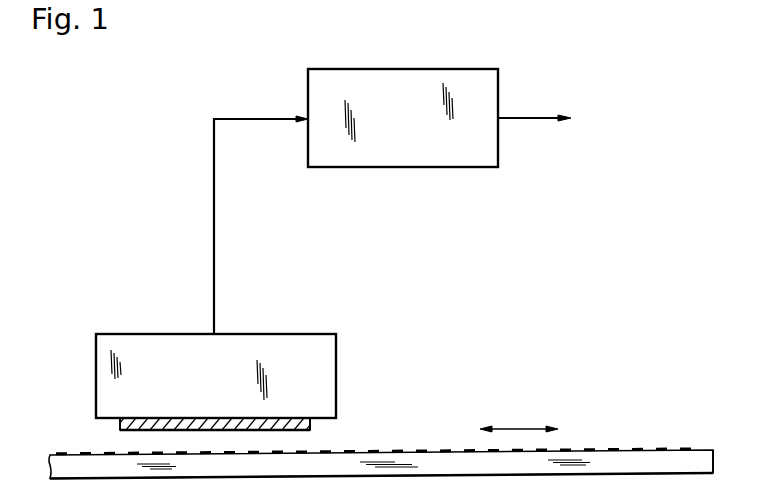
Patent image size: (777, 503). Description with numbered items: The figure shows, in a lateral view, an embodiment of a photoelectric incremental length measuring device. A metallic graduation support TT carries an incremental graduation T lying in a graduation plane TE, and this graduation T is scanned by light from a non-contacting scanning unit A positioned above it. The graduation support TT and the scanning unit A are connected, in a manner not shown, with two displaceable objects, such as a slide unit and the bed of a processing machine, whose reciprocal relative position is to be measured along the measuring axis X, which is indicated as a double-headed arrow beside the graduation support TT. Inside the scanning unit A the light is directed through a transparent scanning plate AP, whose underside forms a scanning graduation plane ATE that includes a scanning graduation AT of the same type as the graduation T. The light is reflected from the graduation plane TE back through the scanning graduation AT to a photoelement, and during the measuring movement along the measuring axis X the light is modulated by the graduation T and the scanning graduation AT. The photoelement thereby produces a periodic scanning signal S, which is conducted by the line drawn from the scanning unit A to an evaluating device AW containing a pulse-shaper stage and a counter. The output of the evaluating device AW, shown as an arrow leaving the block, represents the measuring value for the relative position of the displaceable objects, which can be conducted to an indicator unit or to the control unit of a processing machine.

The evaluating device AW is at (400, 150).
The scanning signal S is at (276, 120).
The measurement output M is at (538, 119).
The scanning unit A is at (324, 358).
The scanning plate AP is at (203, 419).
The scanning graduation plane ATE is at (125, 432).
The scanning graduation AT is at (280, 431).
The incremental graduation T is at (623, 447).
The graduation plane TE is at (708, 449).
The graduation support TT is at (598, 462).
The measuring axis X is at (519, 419).